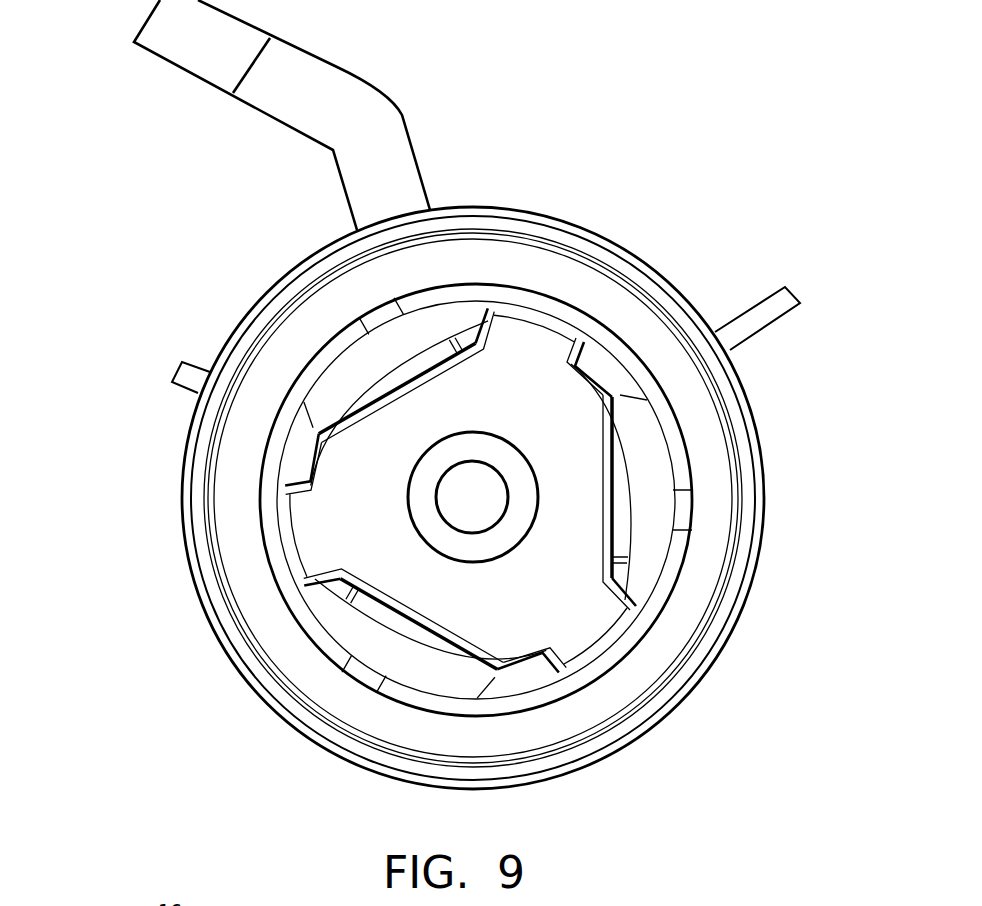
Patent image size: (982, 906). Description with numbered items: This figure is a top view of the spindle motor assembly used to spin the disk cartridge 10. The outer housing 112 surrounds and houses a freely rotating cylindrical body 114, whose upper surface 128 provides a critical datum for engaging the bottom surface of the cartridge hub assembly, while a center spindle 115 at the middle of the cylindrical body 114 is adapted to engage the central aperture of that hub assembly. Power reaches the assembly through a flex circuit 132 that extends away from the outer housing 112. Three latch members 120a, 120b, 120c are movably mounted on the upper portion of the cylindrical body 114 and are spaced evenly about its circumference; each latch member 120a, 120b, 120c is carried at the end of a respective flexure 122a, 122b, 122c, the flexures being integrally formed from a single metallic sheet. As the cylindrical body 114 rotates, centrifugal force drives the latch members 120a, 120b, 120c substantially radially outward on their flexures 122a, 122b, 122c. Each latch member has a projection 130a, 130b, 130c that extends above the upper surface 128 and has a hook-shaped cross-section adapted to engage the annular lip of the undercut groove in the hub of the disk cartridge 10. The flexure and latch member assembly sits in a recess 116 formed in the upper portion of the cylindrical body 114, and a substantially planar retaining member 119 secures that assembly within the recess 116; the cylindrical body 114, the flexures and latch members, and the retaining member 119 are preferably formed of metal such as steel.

The disk cartridge 10 is at (160, 501).
The outer housing 112 is at (738, 640).
The cylindrical body 114 is at (594, 295).
The center spindle 115 is at (491, 510).
The recess 116 is at (310, 413).
The retaining member 119 is at (300, 535).
The latch member 120a is at (370, 385).
The latch member 120b is at (623, 478).
The latch member 120c is at (415, 645).
The flexure 122a is at (385, 385).
The flexure 122b is at (603, 463).
The flexure 122c is at (437, 626).
The upper surface 128 is at (530, 300).
The projection 130a is at (450, 312).
The projection 130b is at (655, 484).
The projection 130c is at (340, 620).
The flex circuit 132 is at (343, 70).